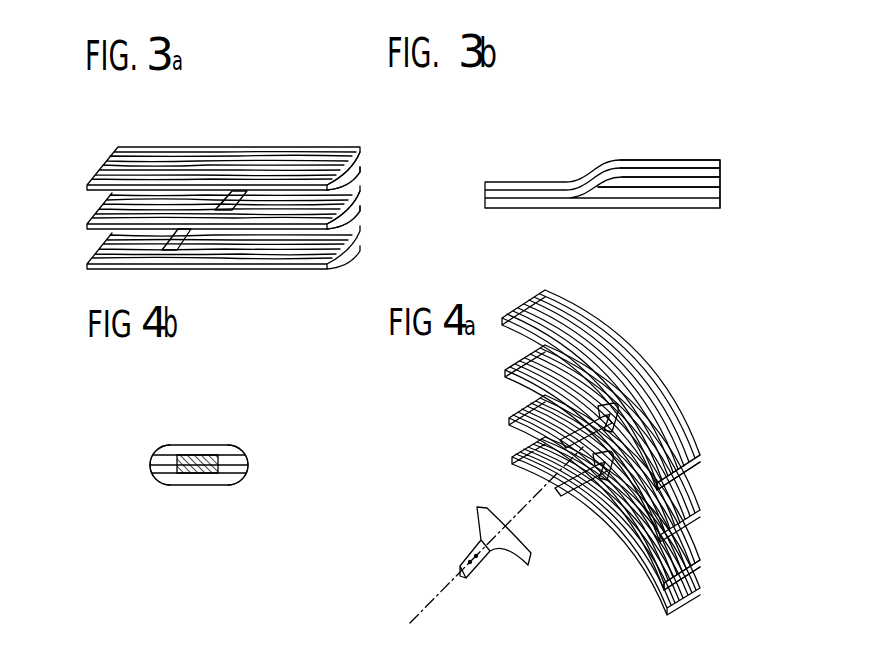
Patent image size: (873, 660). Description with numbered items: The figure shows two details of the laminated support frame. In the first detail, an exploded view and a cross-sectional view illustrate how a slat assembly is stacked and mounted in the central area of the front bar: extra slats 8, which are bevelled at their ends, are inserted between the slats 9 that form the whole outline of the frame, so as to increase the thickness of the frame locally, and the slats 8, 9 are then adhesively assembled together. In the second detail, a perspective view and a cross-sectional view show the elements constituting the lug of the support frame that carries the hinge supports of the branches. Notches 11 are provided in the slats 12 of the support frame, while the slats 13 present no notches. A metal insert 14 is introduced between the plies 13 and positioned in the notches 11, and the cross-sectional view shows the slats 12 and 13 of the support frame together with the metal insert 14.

In FIG. 3a, the slat 8 is at (358, 168).
In FIG. 3b, the slat 8 is at (720, 195).
In FIG. 3a, the slat 9 is at (120, 172).
In FIG. 3b, the slat 9 is at (487, 204).
In FIG. 4a, the notch 11 is at (617, 437).
In FIG. 4b, the slat 12 is at (157, 470).
In FIG. 4a, the slat 12 is at (513, 398).
In FIG. 4b, the slat 13 is at (233, 480).
In FIG. 4a, the slat 13 is at (700, 557).
In FIG. 4b, the metal insert 14 is at (208, 456).
In FIG. 4a, the metal insert 14 is at (478, 518).